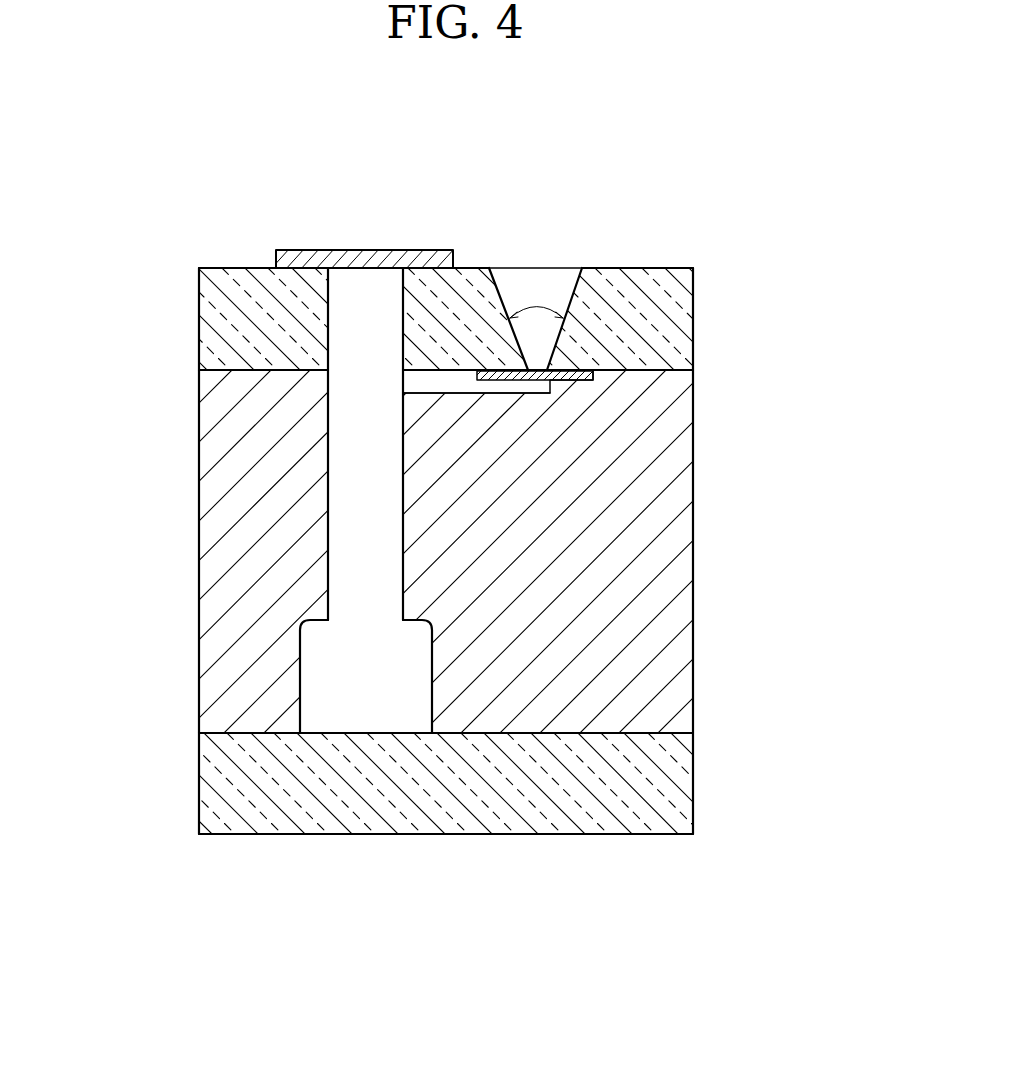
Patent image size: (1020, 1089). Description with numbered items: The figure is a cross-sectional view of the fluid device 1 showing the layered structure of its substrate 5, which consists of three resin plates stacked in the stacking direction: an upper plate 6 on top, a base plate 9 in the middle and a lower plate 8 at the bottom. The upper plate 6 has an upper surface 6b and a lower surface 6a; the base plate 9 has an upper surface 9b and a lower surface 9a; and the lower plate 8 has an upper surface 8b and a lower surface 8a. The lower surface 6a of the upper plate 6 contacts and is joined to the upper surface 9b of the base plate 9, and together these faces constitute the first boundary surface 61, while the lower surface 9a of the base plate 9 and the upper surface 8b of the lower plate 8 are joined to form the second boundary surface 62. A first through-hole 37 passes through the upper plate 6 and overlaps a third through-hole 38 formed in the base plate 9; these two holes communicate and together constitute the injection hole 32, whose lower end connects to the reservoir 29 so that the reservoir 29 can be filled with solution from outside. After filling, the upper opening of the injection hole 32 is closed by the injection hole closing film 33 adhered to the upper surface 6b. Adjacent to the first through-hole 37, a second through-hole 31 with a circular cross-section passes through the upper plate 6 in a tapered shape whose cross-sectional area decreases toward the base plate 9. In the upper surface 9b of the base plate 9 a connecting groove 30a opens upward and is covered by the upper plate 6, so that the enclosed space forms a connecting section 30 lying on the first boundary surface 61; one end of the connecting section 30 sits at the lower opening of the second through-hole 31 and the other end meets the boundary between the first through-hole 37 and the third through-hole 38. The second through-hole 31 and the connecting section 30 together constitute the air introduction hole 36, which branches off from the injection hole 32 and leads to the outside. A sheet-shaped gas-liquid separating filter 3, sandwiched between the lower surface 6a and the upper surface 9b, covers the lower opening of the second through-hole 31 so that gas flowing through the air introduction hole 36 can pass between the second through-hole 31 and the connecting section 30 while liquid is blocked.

The fluid device 1 is at (742, 172).
The gas-liquid separating filter 3 is at (573, 375).
The substrate 5 is at (802, 322).
The upper plate 6 is at (648, 333).
The lower surface of the upper plate 6a is at (225, 372).
The upper surface of the upper plate 6b is at (215, 268).
The first boundary surface 61 is at (225, 370).
The second boundary surface 62 is at (207, 733).
The lower plate 8 is at (667, 773).
The lower surface of the lower plate 8a is at (273, 835).
The upper surface of the lower plate 8b is at (220, 733).
The base plate 9 is at (657, 400).
The lower surface of the base plate 9a is at (253, 737).
The upper surface of the base plate 9b is at (267, 368).
The reservoir 29 is at (432, 672).
The connecting section 30 is at (425, 390).
The connecting groove 30a is at (458, 380).
The second through-hole 31 is at (548, 368).
The injection hole 32 is at (390, 135).
The injection hole closing film 33 is at (440, 250).
The air introduction hole 36 is at (544, 268).
The first through-hole 37 is at (403, 310).
The third through-hole 38 is at (403, 455).